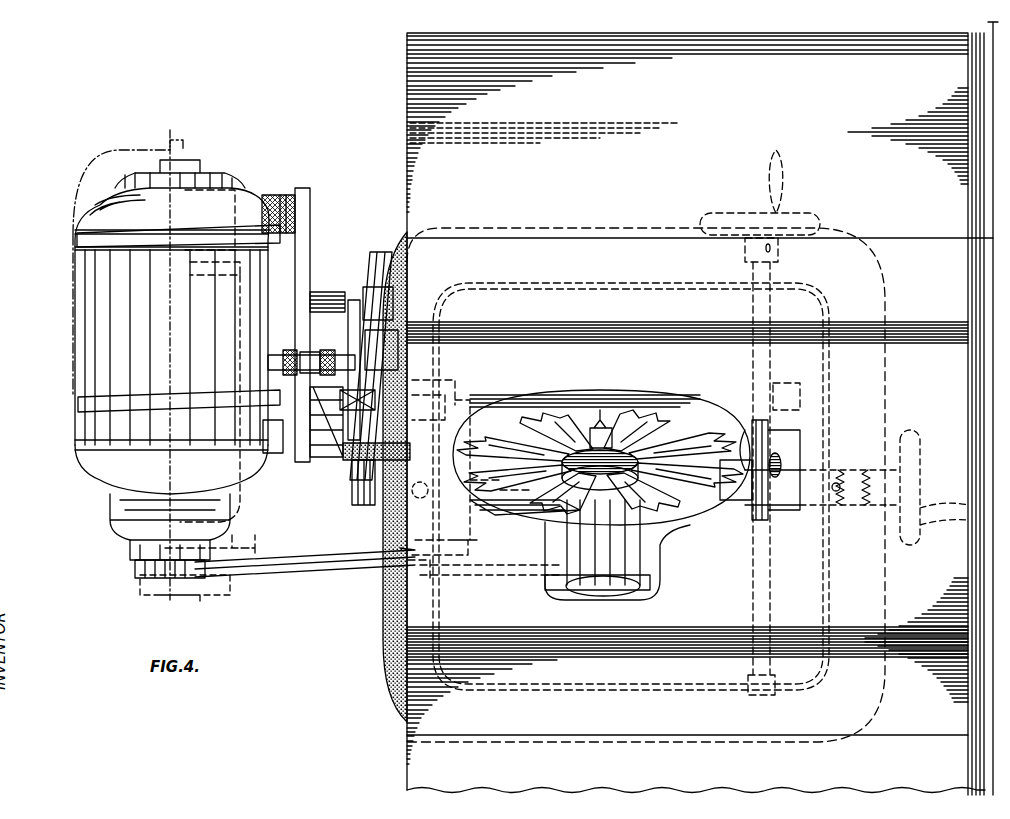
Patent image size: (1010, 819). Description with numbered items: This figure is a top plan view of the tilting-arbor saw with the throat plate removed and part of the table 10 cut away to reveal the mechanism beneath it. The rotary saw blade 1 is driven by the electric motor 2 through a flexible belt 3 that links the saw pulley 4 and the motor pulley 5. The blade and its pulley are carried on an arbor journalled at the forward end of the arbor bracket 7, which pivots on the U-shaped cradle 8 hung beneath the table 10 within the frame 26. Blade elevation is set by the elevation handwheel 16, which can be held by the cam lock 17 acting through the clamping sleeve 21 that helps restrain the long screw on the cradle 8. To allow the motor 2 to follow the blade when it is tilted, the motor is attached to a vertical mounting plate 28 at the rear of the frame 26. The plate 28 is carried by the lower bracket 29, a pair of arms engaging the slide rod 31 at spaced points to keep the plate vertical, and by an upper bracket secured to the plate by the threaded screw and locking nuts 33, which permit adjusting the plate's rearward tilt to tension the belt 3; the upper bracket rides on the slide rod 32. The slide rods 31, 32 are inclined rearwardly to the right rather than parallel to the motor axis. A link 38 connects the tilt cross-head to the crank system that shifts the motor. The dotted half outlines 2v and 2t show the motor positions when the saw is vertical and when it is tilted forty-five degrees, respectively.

The rotary saw blade 1 is at (678, 505).
The electric motor 2 is at (222, 177).
The dotted half outline of motor in tilted position 2t is at (100, 185).
The dotted half outline of motor in vertical position 2v is at (262, 525).
The flexible belt 3 is at (336, 565).
The saw pulley 4 is at (615, 578).
The motor pulley 5 is at (135, 568).
The arbor bracket 7 is at (530, 525).
The U-shaped cradle 8 is at (690, 405).
The table 10 is at (702, 408).
The elevation handwheel 16 is at (925, 435).
The cam lock 17 is at (870, 462).
The clamping sleeve 21 is at (815, 510).
The frame 26 is at (385, 632).
The vertical mounting plate 28 is at (311, 203).
The lower bracket 29 is at (340, 292).
The slide rod 31 is at (362, 498).
The slide rod 32 is at (378, 252).
The threaded screw and locking nuts 33 is at (312, 348).
The link 38 is at (790, 468).